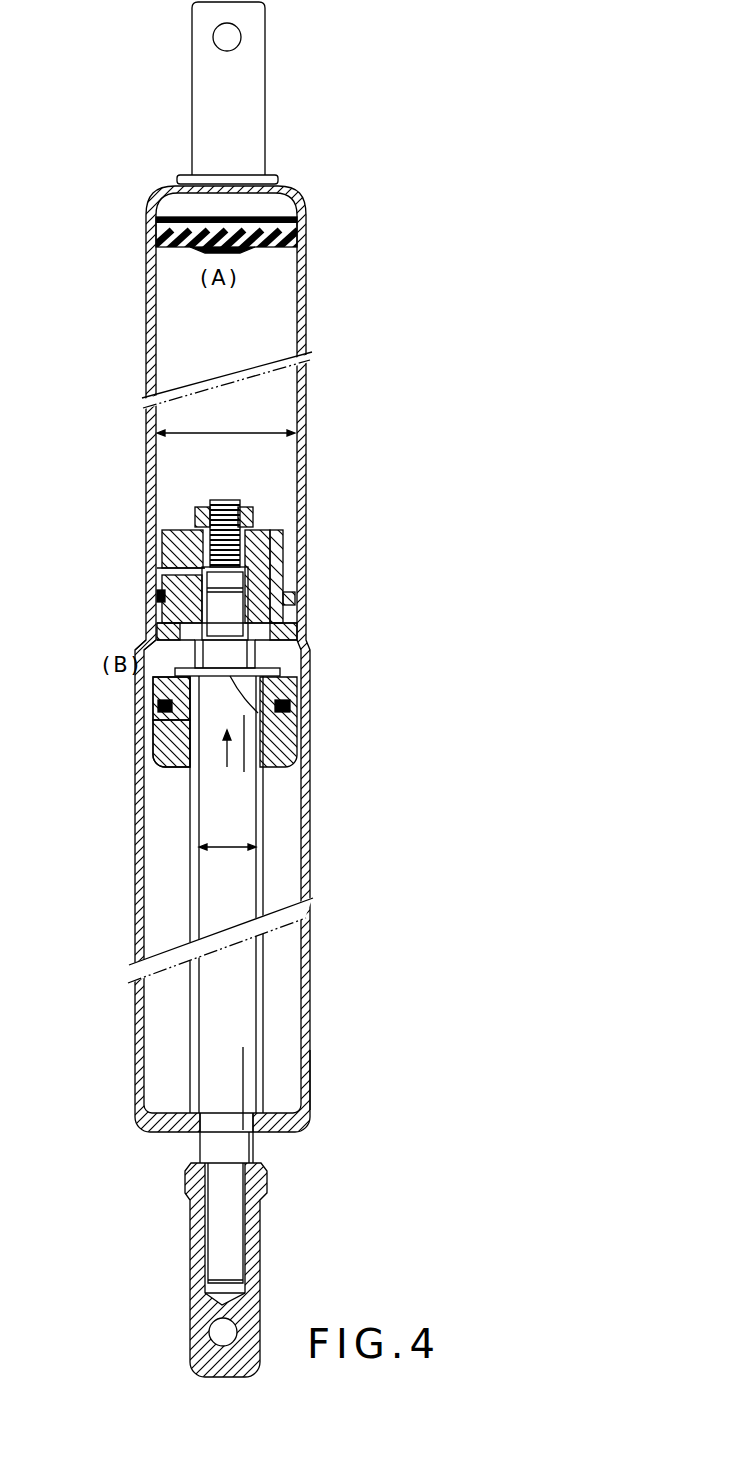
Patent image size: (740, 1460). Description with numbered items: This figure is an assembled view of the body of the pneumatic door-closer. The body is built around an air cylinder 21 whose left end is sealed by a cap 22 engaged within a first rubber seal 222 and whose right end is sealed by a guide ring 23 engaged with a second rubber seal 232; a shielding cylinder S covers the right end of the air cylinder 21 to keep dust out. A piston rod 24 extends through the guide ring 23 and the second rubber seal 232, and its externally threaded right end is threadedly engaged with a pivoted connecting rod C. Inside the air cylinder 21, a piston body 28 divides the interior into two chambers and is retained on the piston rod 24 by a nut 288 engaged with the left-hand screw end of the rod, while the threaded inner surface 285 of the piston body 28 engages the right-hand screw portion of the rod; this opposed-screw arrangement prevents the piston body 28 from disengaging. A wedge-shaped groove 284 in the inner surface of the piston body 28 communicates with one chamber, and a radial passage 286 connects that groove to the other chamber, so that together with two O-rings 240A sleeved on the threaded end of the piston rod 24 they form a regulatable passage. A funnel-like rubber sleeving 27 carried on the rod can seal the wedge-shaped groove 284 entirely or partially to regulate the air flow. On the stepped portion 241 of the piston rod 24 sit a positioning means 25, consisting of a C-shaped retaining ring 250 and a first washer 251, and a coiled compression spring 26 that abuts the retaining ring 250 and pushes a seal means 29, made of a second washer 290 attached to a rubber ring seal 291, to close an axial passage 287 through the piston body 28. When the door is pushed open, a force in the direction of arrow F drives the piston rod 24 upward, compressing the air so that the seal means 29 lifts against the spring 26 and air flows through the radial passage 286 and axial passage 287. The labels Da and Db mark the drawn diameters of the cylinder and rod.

The air cylinder 21 is at (308, 287).
The cap 22 is at (280, 208).
The first rubber seal 222 is at (292, 235).
The guide ring 23 is at (307, 770).
The second rubber seal 232 is at (307, 717).
The piston rod 24 is at (232, 988).
The O-rings 240A is at (197, 530).
The stepped portion 241 is at (307, 733).
The positioning means 25 is at (112, 797).
The C-shaped retaining ring 250 is at (140, 690).
The first washer 251 is at (137, 722).
The coiled compression spring 26 is at (305, 675).
The funnel-like rubber sleeving 27 is at (262, 572).
The piston body 28 is at (173, 557).
The wedge-shaped groove 284 is at (140, 652).
The threaded inner surface 285 is at (195, 577).
The radial passage 286 is at (155, 600).
The axial passage 287 is at (272, 548).
The nut 288 is at (257, 513).
The seal means 29 is at (140, 675).
The second washer 290 is at (305, 667).
The rubber ring seal 291 is at (310, 642).
The shielding cylinder S is at (313, 1077).
The pivoted connecting rod C is at (260, 1238).
The arrow F is at (216, 751).
The tube inner diameter Da is at (226, 421).
The rod diameter Db is at (227, 835).